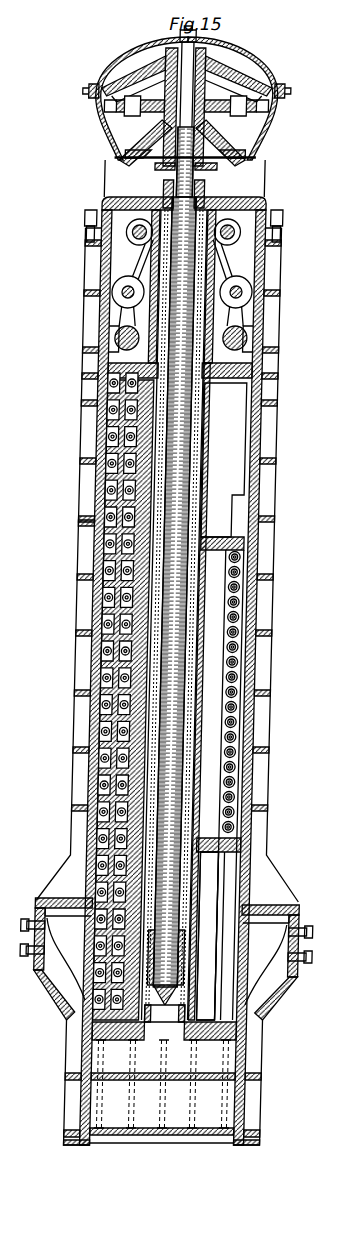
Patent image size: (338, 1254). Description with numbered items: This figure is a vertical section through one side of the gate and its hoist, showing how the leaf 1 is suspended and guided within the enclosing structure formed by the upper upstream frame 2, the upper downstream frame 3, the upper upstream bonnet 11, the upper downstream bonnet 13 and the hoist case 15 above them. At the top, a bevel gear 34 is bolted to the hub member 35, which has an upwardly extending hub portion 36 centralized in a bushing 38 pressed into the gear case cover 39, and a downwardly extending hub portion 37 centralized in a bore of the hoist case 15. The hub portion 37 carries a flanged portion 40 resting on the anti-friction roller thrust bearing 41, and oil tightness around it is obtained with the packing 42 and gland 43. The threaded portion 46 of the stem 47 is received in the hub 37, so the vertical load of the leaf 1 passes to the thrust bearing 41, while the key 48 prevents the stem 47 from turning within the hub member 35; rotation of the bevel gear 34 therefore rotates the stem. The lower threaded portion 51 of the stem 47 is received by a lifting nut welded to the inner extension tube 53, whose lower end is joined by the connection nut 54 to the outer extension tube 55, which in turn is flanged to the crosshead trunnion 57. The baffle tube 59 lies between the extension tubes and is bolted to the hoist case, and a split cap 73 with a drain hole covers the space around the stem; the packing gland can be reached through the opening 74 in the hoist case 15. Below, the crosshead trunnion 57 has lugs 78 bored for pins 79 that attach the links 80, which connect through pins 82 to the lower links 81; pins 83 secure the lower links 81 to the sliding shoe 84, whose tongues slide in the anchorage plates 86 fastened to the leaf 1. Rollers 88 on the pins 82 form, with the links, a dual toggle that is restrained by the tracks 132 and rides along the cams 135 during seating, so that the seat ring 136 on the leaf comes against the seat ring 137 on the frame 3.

The leaf 1 is at (140, 772).
The upper upstream frame 2 is at (62, 1082).
The upper downstream frame 3 is at (260, 1082).
The upper upstream bonnet 11 is at (65, 564).
The upper downstream bonnet 13 is at (281, 565).
The hoist case 15 is at (173, 98).
The bevel gear 34 is at (201, 115).
The hub member 35 is at (240, 69).
The upwardly extending hub portion 36 is at (163, 36).
The downwardly extending hub portion 37 is at (185, 167).
The bushing 38 is at (203, 98).
The gear case cover 39 is at (280, 74).
The flanged portion 40 is at (88, 109).
The anti-friction roller thrust bearing 41 is at (246, 143).
The packing 42 is at (254, 157).
The gland 43 is at (222, 173).
The threaded portion 46 is at (120, 143).
The stem 47 is at (243, 194).
The key 48 is at (132, 69).
The downwardly extending threaded portion 51 is at (197, 557).
The inner extension tube 53 is at (183, 992).
The connection nut 54 is at (178, 1011).
The outer extension tube 55 is at (205, 936).
The crosshead trunnion 57 is at (260, 259).
The baffle tube 59 is at (180, 957).
The split cap 73 is at (124, 193).
The opening 74 is at (181, 190).
The lug 78 is at (98, 259).
The pin 79 is at (174, 223).
The link 80 is at (177, 238).
The lower link 81 is at (176, 317).
The pin 82 is at (179, 289).
The pin 83 is at (177, 336).
The sliding shoe 84 is at (150, 343).
The anchorage plate 86 is at (174, 372).
The roller 88 is at (178, 299).
The track 132 is at (173, 534).
The cam 135 is at (169, 941).
The seat ring 136 is at (252, 843).
The seat ring 137 is at (84, 1048).